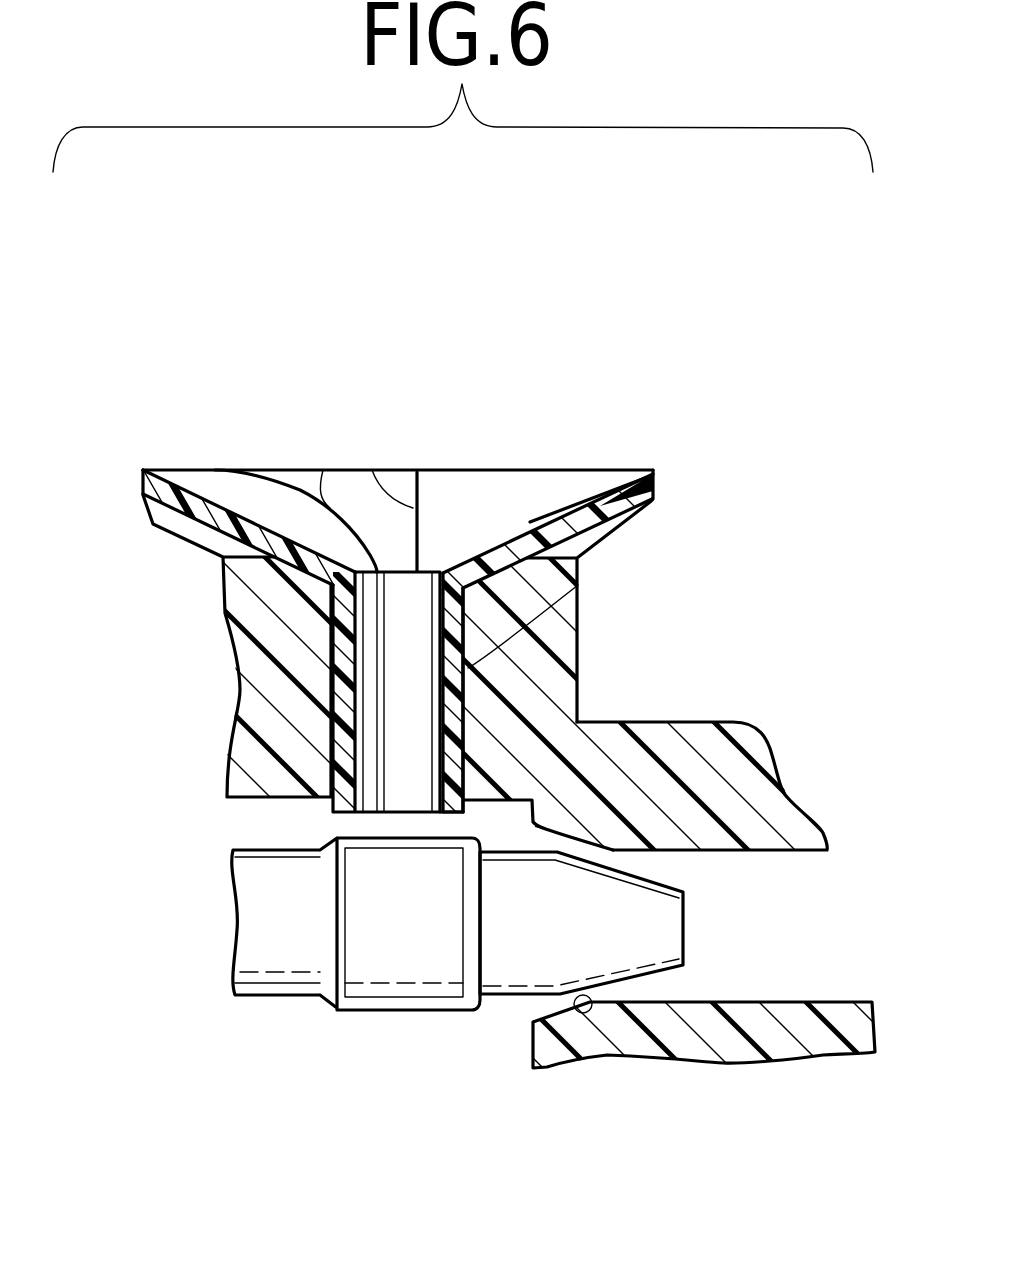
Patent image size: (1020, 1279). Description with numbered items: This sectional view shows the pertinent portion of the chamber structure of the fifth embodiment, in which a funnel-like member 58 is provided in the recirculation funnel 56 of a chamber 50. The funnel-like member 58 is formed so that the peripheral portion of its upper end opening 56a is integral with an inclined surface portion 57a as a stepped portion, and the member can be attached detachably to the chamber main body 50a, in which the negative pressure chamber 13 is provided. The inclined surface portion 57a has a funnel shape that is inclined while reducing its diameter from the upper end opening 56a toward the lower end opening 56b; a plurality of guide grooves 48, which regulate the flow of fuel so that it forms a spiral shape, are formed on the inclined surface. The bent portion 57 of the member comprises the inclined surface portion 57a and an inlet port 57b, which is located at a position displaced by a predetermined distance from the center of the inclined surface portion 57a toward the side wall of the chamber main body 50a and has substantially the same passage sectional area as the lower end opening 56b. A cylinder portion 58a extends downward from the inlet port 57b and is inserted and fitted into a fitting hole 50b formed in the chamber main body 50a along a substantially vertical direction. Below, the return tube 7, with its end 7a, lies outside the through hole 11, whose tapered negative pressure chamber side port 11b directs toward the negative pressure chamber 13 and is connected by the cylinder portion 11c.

The return tube 7 is at (511, 998).
The tapered nose of plug 7a is at (690, 927).
The through hole 11 is at (762, 860).
The negative pressure chamber side port 11b is at (588, 1012).
The cylinder portion 11c is at (837, 1002).
The negative pressure chamber 13 is at (465, 1113).
The guide grooves 48 is at (372, 470).
The chamber 50 is at (510, 839).
The chamber main body 50a is at (578, 640).
The fitting hole 50b is at (333, 657).
The recirculation funnel 56 is at (510, 726).
The upper end opening 56a is at (628, 472).
The lower end opening 56b is at (365, 812).
The bent portion of plate 57 is at (532, 726).
The inclined surface portion 57a is at (584, 497).
The inlet port 57b is at (443, 573).
The funnel-like member 58 is at (415, 458).
The cylinder portion 58a is at (578, 585).